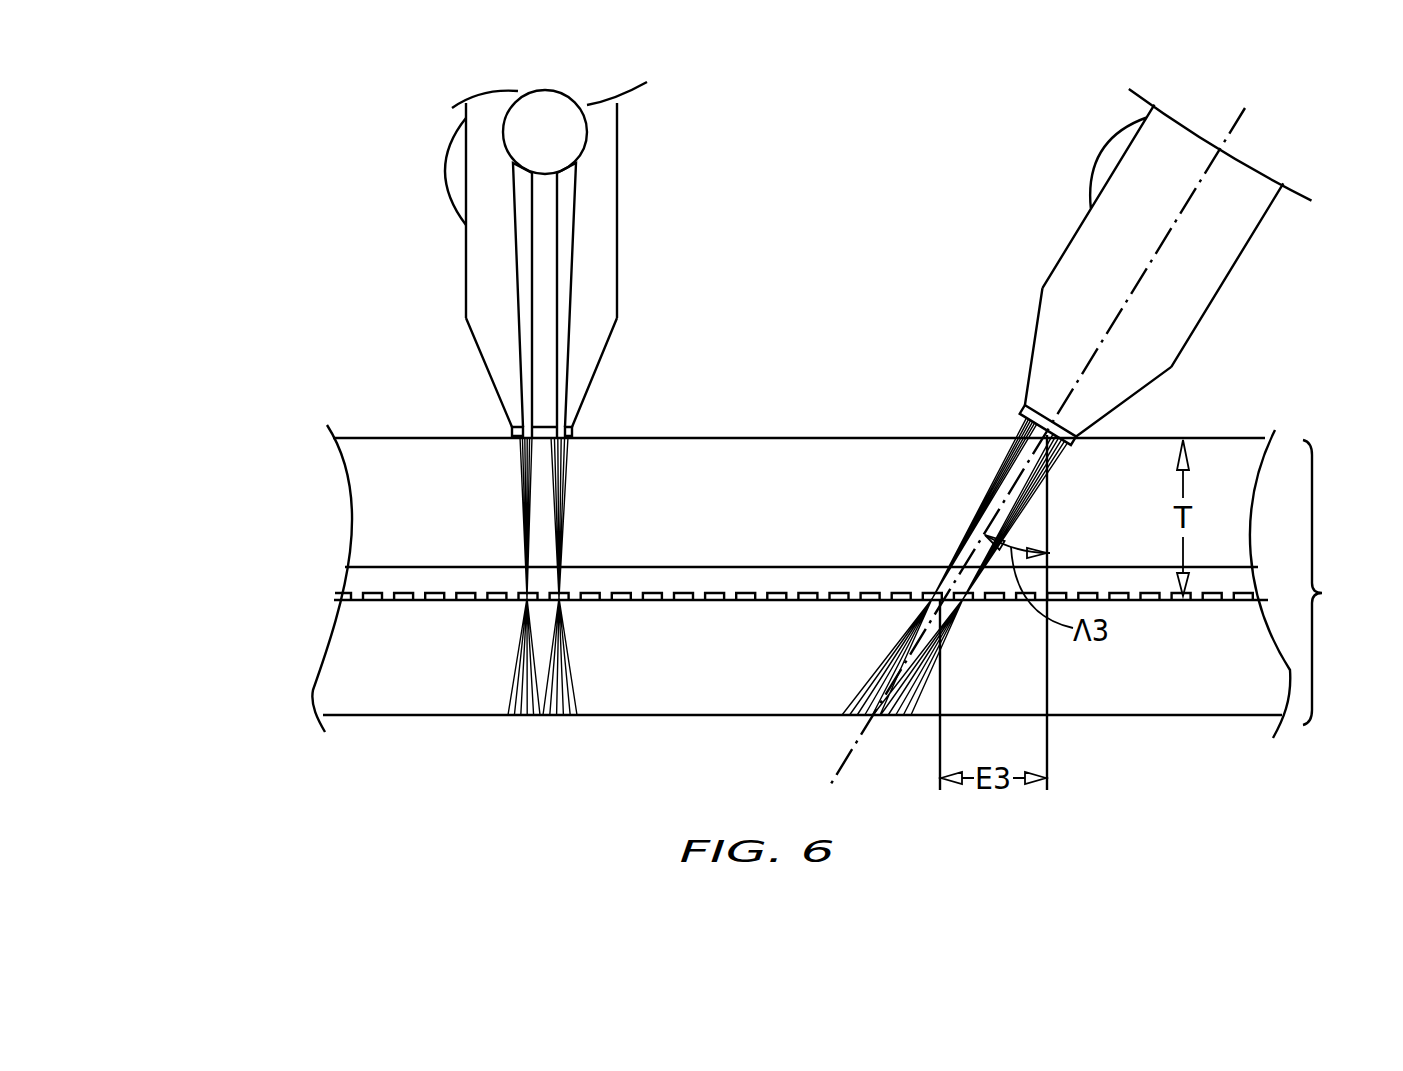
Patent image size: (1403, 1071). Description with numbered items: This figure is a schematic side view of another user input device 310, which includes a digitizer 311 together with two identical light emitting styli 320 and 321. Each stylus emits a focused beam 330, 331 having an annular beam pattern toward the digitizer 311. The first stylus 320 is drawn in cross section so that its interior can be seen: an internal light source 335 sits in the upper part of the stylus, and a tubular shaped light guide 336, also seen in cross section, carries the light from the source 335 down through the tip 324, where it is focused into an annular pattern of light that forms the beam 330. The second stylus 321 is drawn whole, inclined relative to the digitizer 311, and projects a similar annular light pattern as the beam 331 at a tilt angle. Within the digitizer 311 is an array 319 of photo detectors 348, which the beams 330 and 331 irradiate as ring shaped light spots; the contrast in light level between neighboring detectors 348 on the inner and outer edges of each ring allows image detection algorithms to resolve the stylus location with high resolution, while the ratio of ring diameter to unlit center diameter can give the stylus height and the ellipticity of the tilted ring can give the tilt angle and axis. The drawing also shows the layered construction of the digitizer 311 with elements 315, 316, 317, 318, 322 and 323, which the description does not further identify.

The input device 310 is at (816, 268).
The digitizer 311 is at (1336, 582).
The upper layer 315 is at (362, 478).
The top surface 316 is at (381, 437).
The interface layer 317 is at (348, 578).
The lower layer 318 is at (335, 682).
The array 319 is at (369, 602).
The light emitting stylus 320 is at (465, 278).
The light emitting stylus 321 is at (1060, 257).
The second nozzle tip 322 is at (1023, 410).
The nozzle bulge 323 is at (445, 165).
The tip 324 is at (510, 433).
The focused beam 330 is at (570, 525).
The focused beam 331 is at (963, 516).
The internal light source 335 is at (547, 115).
The tubular shaped light guide 336 is at (565, 200).
The photo detectors 348 is at (650, 602).